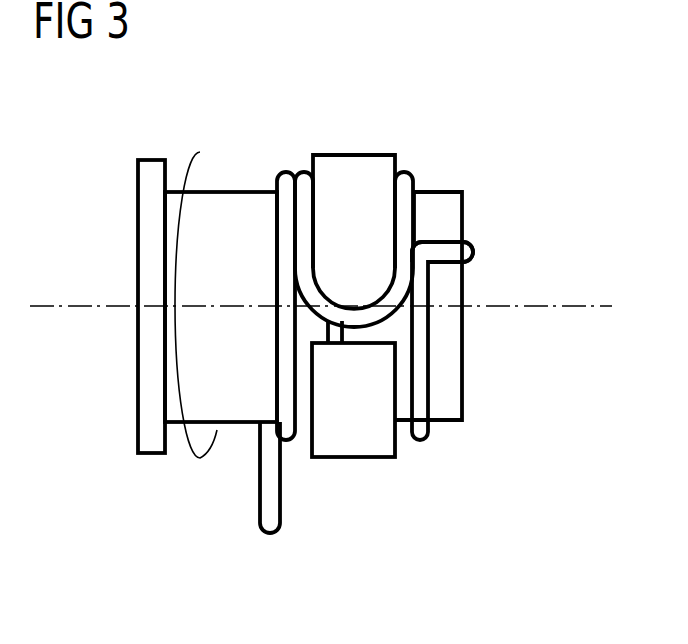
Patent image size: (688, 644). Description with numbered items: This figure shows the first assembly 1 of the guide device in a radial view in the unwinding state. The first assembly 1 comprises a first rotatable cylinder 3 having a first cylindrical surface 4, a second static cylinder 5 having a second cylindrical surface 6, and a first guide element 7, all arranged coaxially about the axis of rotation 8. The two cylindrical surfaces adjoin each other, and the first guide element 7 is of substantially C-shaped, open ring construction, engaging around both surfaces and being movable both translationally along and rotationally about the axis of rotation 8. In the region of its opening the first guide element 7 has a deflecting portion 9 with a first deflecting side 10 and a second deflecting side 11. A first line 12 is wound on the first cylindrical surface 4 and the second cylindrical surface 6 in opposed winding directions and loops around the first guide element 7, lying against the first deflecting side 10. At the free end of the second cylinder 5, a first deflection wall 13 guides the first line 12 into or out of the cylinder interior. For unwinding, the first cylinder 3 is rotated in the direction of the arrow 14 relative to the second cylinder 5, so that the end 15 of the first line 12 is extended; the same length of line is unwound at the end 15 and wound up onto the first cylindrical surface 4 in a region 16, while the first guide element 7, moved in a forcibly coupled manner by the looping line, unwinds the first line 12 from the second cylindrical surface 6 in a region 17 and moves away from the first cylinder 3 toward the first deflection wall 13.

The first assembly 1 is at (500, 97).
The first rotatable cylinder 3 is at (105, 241).
The first cylindrical surface 4 is at (245, 405).
The second static cylinder 5 is at (490, 431).
The second cylindrical surface 6 is at (452, 372).
The first guide element 7 is at (365, 167).
The axis of rotation 8 is at (593, 306).
The deflecting portion 9 is at (400, 328).
The first deflecting side 10 is at (355, 305).
The second deflecting side 11 is at (360, 348).
The first line 12 is at (403, 177).
The first deflection wall 13 is at (470, 235).
The arrow 14 is at (215, 182).
The end of the first line 15 is at (268, 530).
The region 16 is at (305, 266).
The region 17 is at (403, 261).